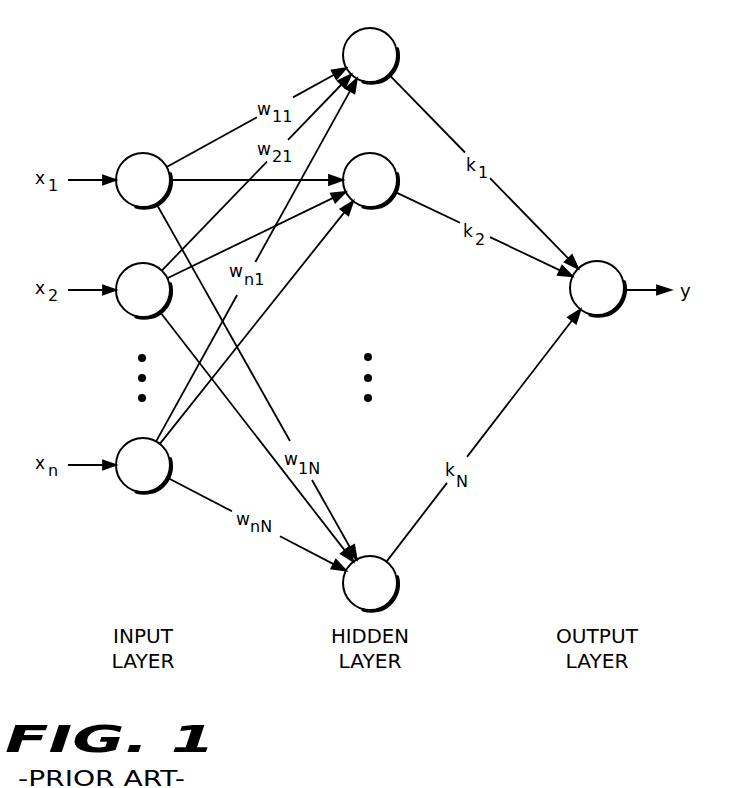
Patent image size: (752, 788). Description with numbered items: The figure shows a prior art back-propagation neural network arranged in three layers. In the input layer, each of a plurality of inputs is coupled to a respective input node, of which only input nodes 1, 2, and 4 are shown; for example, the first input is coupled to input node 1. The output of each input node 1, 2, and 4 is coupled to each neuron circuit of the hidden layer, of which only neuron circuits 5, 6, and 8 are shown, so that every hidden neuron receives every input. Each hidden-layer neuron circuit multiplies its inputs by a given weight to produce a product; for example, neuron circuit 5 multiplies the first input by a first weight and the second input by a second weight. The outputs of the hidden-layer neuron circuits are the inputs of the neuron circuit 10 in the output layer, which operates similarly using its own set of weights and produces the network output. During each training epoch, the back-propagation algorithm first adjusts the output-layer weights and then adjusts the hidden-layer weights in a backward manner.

The input node 1 is at (123, 158).
The input node 2 is at (123, 268).
The input node 4 is at (123, 443).
The neuron circuit 5 is at (393, 42).
The neuron circuit 6 is at (383, 207).
The neuron circuit 8 is at (373, 555).
The neuron circuit 10 is at (612, 264).